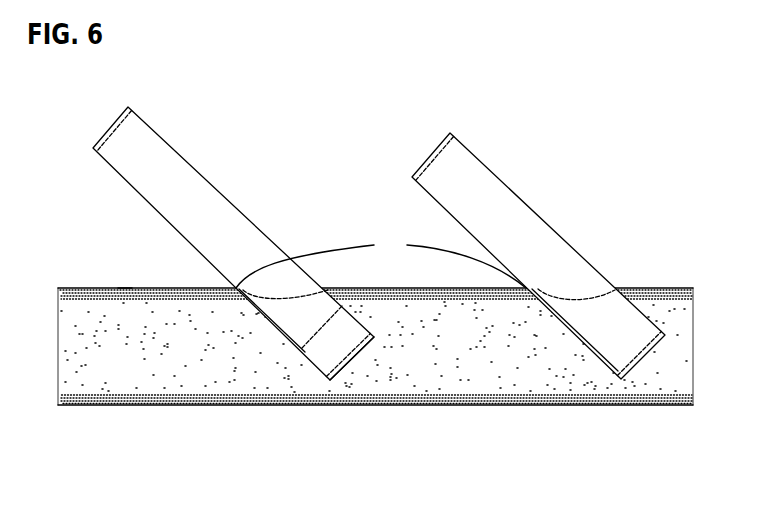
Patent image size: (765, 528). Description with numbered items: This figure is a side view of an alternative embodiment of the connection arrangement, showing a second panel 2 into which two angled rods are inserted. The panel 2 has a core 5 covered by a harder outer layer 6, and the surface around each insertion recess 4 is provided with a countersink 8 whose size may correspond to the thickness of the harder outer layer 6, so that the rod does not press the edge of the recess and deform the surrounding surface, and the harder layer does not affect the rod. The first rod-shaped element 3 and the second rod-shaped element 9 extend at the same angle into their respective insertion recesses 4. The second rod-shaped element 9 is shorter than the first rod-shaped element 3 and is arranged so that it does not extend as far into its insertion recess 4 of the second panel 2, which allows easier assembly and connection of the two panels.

The second panel 2 is at (656, 288).
The first rod-shaped element 3 is at (522, 227).
The insertion recess 4 is at (330, 350).
The core 5 is at (192, 353).
The harder outer layer 6 is at (125, 293).
The countersink 8 is at (381, 258).
The second rod-shaped element 9 is at (218, 212).